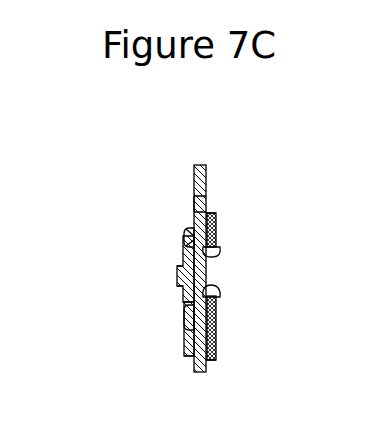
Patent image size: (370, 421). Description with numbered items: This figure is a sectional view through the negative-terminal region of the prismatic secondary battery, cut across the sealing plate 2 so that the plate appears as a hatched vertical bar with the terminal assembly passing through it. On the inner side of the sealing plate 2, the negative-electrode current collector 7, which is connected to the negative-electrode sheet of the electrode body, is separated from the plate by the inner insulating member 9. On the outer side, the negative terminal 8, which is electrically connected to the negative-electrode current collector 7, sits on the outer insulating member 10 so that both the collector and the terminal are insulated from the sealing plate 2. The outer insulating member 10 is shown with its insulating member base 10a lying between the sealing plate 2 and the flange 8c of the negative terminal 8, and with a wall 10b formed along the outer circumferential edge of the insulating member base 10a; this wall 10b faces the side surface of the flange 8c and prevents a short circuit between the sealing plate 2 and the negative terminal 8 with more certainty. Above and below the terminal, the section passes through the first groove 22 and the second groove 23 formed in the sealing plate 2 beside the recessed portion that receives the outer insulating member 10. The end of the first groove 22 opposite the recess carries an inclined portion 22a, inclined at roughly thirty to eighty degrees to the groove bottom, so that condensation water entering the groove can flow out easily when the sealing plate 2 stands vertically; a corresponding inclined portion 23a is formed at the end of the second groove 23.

The sealing plate 2 is at (206, 178).
The negative-electrode current collector 7 is at (216, 233).
The negative terminal 8 is at (183, 268).
The flange 8c is at (183, 297).
The inner insulating member 9 is at (216, 213).
The outer insulating member 10 is at (189, 233).
The insulating member base 10a is at (188, 245).
The wall 10b is at (188, 222).
The first groove 22 is at (194, 340).
The inclined portion 22a is at (183, 359).
The second groove 23 is at (194, 204).
The inclined portion 23a is at (194, 197).